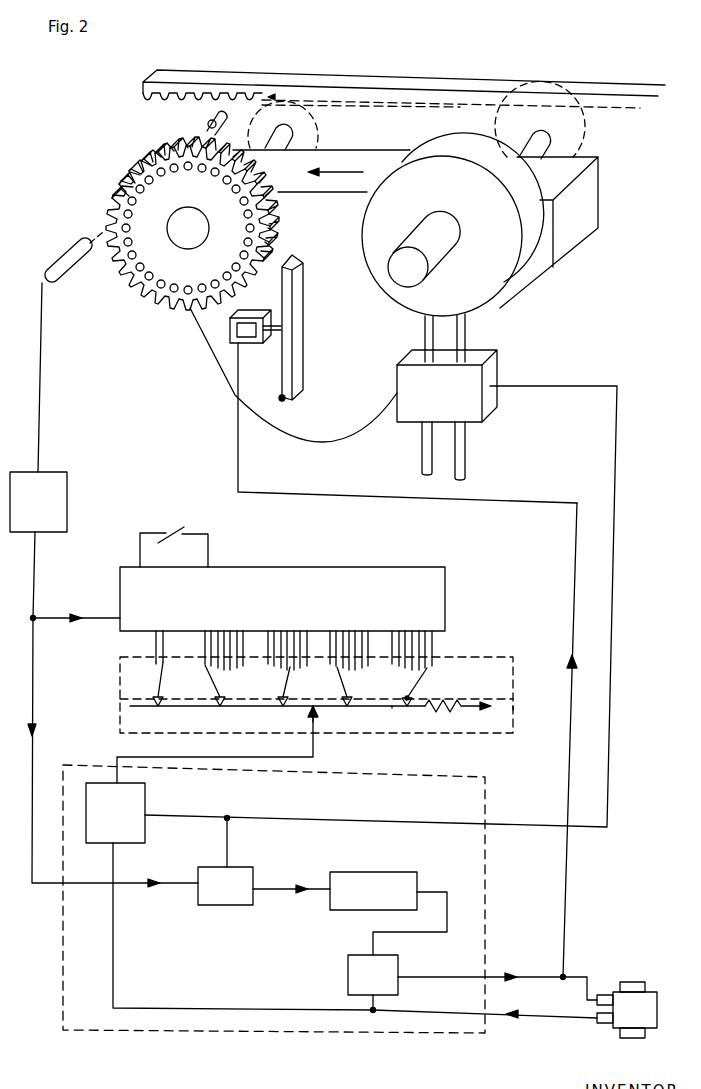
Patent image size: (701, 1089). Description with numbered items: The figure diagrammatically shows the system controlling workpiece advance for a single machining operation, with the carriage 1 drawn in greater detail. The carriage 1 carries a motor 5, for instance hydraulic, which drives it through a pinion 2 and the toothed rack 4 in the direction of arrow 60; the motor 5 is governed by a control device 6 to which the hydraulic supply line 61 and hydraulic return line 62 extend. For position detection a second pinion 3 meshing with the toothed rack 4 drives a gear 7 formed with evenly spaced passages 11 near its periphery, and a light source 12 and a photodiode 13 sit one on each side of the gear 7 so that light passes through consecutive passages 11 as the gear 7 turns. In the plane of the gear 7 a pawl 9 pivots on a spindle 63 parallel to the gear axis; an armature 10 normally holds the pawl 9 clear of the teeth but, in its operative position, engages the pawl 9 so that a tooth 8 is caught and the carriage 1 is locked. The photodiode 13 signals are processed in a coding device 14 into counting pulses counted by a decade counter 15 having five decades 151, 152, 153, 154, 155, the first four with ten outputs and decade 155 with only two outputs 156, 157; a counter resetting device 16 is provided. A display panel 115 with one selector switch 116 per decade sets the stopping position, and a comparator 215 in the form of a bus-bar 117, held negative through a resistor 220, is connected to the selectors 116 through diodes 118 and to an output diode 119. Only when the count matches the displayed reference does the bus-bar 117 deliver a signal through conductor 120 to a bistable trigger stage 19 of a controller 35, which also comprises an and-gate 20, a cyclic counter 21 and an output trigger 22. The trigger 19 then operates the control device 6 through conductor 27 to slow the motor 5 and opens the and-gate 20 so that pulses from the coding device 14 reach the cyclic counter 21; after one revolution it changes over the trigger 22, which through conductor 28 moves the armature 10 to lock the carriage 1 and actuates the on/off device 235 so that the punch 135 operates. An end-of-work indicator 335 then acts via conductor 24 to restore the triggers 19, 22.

The carriage 1 is at (587, 217).
The pinion 2 is at (583, 137).
The pinion 3 is at (332, 126).
The toothed rack 4 is at (245, 81).
The motor 5 is at (370, 237).
The control device 6 is at (491, 372).
The gear 7 is at (137, 280).
The tooth 8 is at (286, 240).
The pawl 9 is at (302, 302).
The armature 10 is at (241, 329).
The passages 11 is at (118, 192).
The light source 12 is at (205, 124).
The photodiode 13 is at (60, 256).
The coding device 14 is at (38, 468).
The decade counter 15 is at (283, 610).
The counter resetting device 16 is at (166, 548).
The trigger stage 19 is at (117, 781).
The and-gate 20 is at (227, 865).
The cyclic counter 21 is at (373, 932).
The output trigger 22 is at (373, 953).
The conductor 24 is at (533, 1016).
The conductor 27 is at (613, 647).
The conductor 28 is at (566, 912).
The controller 35 is at (240, 955).
The arrow 60 is at (356, 171).
The hydraulic supply line 61 is at (422, 458).
The hydraulic return line 62 is at (465, 458).
The spindle 63 is at (280, 398).
The display panel 115 is at (313, 694).
The selector switch 116 is at (418, 688).
The bus-bar 117 is at (392, 710).
The diode 118 is at (402, 699).
The output diode 119 is at (311, 720).
The conductor 120 is at (203, 757).
The punch 135 is at (641, 1000).
The decade 151 is at (412, 631).
The decade 152 is at (348, 631).
The decade 153 is at (287, 631).
The decade 154 is at (224, 631).
The decade 155 is at (163, 630).
The output 156 is at (175, 646).
The output 157 is at (156, 650).
The comparator 215 is at (503, 716).
The resistor 220 is at (453, 718).
The on/off device 235 is at (605, 995).
The end-of-work indicator 335 is at (600, 1023).